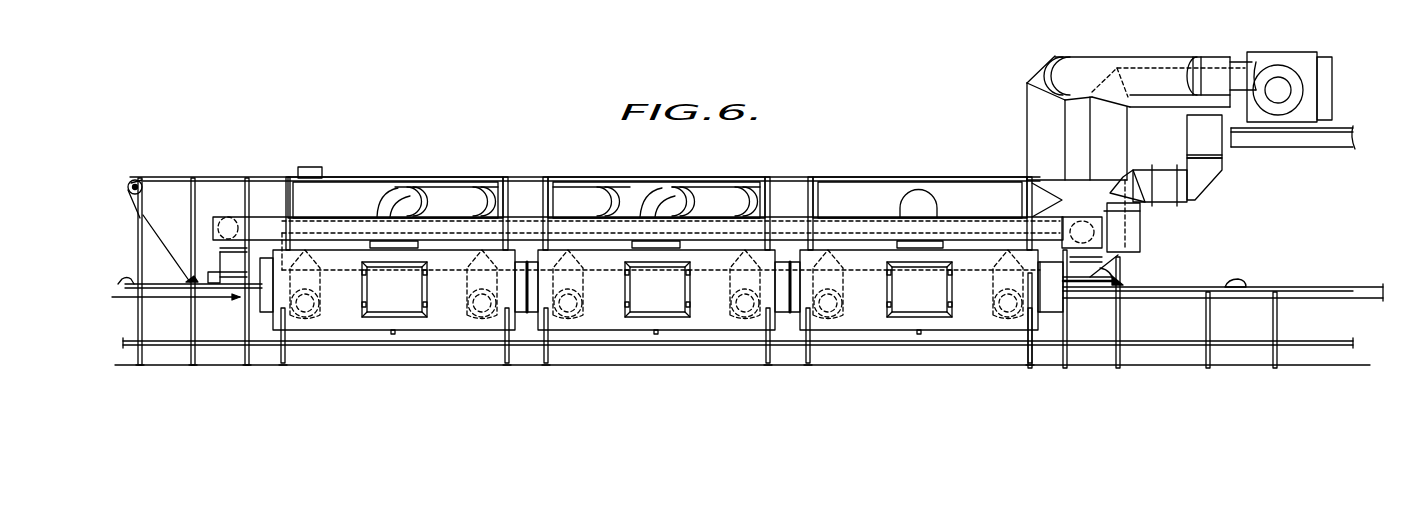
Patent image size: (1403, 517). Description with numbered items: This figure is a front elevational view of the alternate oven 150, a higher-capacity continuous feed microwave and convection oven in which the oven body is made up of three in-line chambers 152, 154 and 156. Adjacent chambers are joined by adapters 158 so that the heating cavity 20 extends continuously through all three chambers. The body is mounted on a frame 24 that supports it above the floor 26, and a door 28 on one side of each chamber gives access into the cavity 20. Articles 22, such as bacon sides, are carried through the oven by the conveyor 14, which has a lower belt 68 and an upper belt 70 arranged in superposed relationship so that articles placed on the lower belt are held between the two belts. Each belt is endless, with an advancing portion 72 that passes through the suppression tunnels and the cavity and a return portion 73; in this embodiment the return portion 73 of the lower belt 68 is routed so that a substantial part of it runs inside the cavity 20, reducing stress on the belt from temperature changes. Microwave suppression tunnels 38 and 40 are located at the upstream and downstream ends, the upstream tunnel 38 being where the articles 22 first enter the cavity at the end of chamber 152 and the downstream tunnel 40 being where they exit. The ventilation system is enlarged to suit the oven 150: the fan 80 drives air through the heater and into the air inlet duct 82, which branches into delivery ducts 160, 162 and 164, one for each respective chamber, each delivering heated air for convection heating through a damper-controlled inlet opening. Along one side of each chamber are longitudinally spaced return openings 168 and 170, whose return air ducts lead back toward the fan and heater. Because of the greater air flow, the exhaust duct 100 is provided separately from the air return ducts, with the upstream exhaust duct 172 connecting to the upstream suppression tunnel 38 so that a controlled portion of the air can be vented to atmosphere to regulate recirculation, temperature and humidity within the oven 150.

The conveyor 14 is at (1348, 289).
The cavity 20 is at (442, 320).
The articles 22 is at (124, 283).
The frame 24 is at (210, 340).
The floor 26 is at (165, 365).
The door 28 is at (366, 291).
The upstream microwave suppression tunnel 38 is at (1113, 284).
The downstream microwave suppression tunnel 40 is at (214, 278).
The lower belt 68 is at (175, 298).
The upper belt 70 is at (273, 175).
The advancing portion 72 is at (1158, 287).
The return portion 73 is at (1162, 300).
The fan 80 is at (1290, 75).
The air inlet duct 82 is at (978, 197).
The exhaust duct 100 is at (298, 220).
The alternate oven 150 is at (375, 128).
The chamber 152 is at (872, 318).
The chamber 154 is at (609, 318).
The chamber 156 is at (347, 318).
The adapters 158 is at (521, 313).
The delivery duct 160 is at (920, 190).
The delivery duct 162 is at (705, 205).
The delivery duct 164 is at (450, 190).
The return opening 168 is at (479, 318).
The return opening 170 is at (311, 318).
The upstream exhaust duct 172 is at (1117, 138).